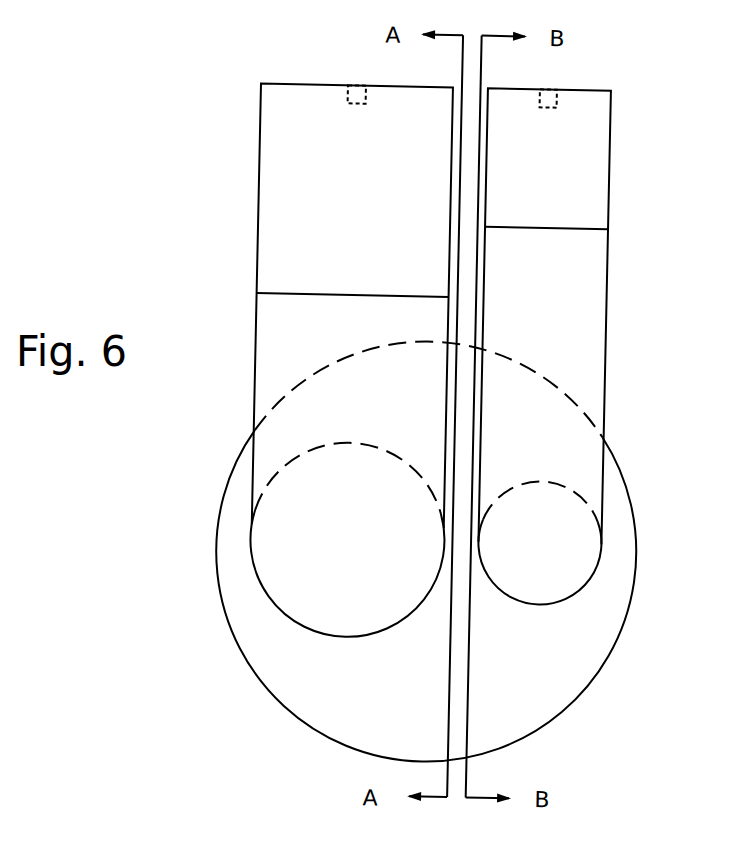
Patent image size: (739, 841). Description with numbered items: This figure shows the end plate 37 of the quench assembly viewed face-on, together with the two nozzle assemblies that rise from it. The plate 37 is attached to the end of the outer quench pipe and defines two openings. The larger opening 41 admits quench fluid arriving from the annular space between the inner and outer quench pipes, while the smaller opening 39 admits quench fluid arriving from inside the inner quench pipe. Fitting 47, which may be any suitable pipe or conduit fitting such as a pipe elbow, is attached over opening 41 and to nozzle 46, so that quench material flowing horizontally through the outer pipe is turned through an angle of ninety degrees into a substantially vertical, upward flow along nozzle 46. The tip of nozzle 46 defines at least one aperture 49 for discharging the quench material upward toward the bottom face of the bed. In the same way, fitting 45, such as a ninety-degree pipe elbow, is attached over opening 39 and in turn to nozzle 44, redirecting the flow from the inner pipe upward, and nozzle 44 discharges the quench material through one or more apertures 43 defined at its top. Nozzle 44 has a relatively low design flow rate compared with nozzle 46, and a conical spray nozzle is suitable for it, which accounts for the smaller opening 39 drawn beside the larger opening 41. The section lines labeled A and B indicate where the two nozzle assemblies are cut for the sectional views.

The plate 37 is at (608, 670).
The opening 39 is at (532, 549).
The opening 41 is at (339, 551).
The aperture 43 is at (548, 83).
The nozzle 44 is at (611, 146).
The fitting 45 is at (611, 356).
The nozzle 46 is at (261, 120).
The fitting 47 is at (262, 325).
The aperture 49 is at (357, 83).